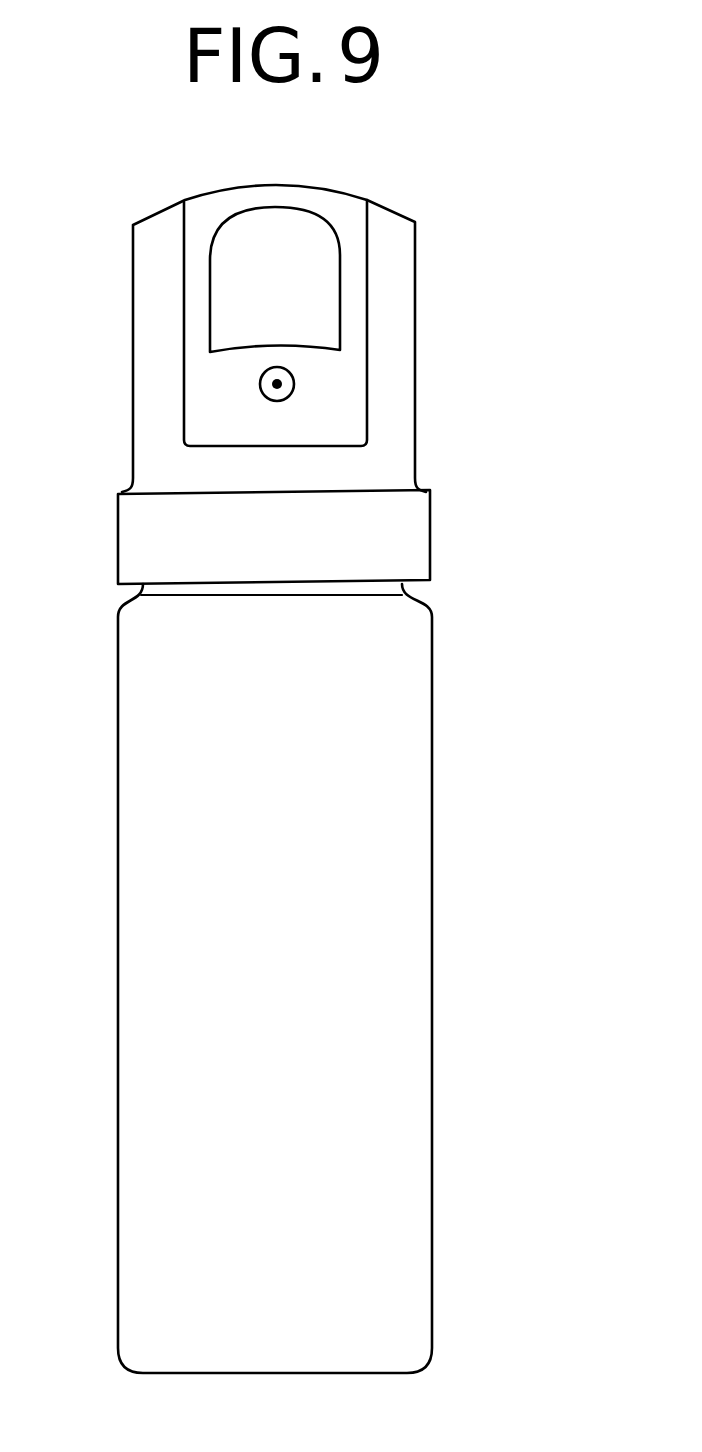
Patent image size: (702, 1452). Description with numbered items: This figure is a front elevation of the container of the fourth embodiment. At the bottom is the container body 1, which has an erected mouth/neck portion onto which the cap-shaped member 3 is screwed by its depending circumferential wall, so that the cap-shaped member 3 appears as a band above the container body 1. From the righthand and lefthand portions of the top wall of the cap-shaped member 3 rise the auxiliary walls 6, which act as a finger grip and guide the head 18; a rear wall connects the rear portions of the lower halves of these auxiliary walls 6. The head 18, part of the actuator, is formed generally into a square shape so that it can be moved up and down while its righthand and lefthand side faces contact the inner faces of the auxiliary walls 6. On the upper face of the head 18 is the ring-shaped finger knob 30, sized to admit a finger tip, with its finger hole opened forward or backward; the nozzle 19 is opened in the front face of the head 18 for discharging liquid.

The container body 1 is at (450, 902).
The cap-shaped member 3 is at (462, 533).
The auxiliary walls 6 is at (403, 264).
The head 18 is at (350, 398).
The nozzle orifice 19 is at (277, 384).
The finger knob 30 is at (320, 198).